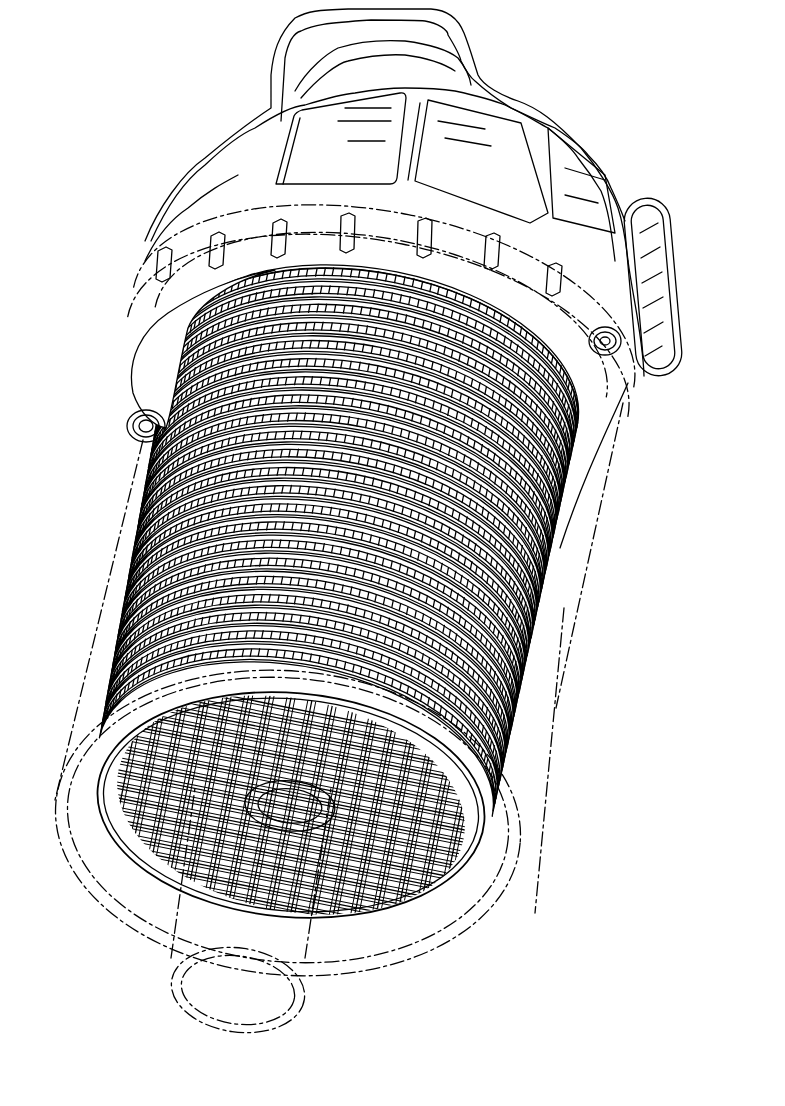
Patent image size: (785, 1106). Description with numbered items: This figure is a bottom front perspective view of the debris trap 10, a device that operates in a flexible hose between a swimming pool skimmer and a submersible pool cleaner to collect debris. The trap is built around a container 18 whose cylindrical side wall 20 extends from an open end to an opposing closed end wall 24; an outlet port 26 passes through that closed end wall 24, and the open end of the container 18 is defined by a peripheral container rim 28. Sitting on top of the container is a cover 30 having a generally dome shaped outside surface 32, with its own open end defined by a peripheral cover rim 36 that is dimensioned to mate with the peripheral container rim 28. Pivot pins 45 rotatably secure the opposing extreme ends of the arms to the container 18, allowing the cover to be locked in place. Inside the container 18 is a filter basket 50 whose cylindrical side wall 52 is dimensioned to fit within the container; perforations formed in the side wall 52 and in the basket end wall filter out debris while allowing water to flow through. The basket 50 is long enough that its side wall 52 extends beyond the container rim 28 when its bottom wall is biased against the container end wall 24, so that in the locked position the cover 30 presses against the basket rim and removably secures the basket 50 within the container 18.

The debris trap 10 is at (590, 97).
The container 18 is at (565, 692).
The cylindrical side wall 20 is at (76, 562).
The closed end wall 24 is at (481, 866).
The outlet port 26 is at (306, 980).
The peripheral container rim 28 is at (567, 287).
The cover 30 is at (198, 170).
The dome shaped outside surface 32 is at (454, 167).
The peripheral cover rim 36 is at (163, 228).
The pivot pins 45 is at (133, 440).
The filter basket 50 is at (403, 535).
The cylindrical side wall 52 is at (516, 605).